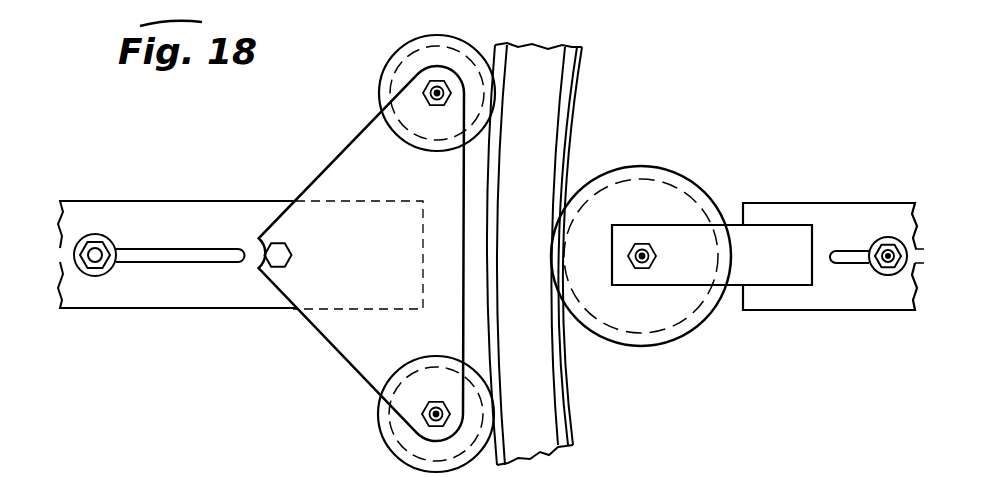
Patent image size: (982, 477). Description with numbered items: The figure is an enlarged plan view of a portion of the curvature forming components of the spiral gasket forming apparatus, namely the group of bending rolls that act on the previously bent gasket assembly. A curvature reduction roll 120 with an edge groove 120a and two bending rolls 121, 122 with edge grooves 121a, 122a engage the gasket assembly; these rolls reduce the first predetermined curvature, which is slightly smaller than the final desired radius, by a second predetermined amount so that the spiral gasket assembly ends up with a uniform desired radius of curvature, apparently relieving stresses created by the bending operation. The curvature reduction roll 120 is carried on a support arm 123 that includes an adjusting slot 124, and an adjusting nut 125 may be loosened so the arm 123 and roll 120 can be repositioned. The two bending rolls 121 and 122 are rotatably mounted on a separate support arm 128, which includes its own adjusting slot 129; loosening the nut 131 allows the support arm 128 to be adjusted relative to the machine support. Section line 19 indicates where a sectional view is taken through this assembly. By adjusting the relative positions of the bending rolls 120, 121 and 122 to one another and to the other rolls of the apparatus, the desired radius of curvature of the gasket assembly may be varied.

The section line 19- 19 is at (62, 255).
The curvature reduction roll 120 is at (618, 168).
The edge groove 120a is at (660, 177).
The bending roll 121 is at (458, 40).
The edge groove 121a is at (403, 53).
The bending roll 122 is at (378, 442).
The edge groove 122a is at (390, 417).
The support arm 123 is at (770, 204).
The adjusting slot 124 is at (841, 252).
The adjusting nut 125 is at (887, 243).
The support arm 128 is at (342, 157).
The adjusting slot 129 is at (178, 253).
The nut 131 is at (97, 247).